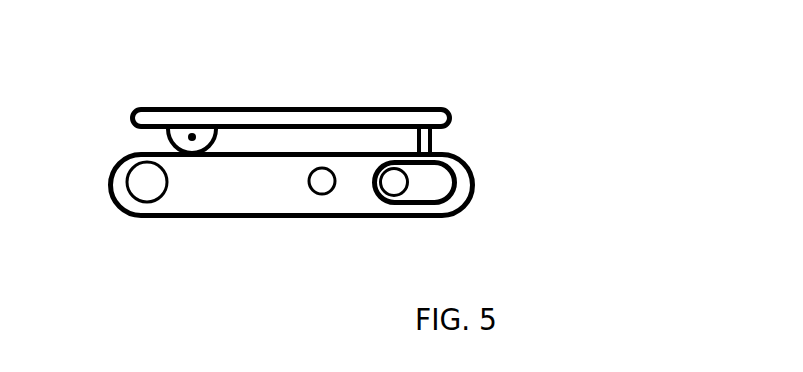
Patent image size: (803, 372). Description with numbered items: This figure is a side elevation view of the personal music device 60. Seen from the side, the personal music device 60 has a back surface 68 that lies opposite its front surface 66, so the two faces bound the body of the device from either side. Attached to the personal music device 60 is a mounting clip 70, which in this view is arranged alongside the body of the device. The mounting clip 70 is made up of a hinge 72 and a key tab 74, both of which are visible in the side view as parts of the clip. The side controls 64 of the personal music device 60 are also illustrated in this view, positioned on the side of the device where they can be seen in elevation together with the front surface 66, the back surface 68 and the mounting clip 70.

The personal music device 60 is at (366, 90).
The side controls 64 is at (420, 203).
The front surface 66 is at (228, 215).
The back surface 68 is at (385, 156).
The mounting clip 70 is at (270, 118).
The hinge 72 is at (182, 137).
The key tab 74 is at (432, 140).